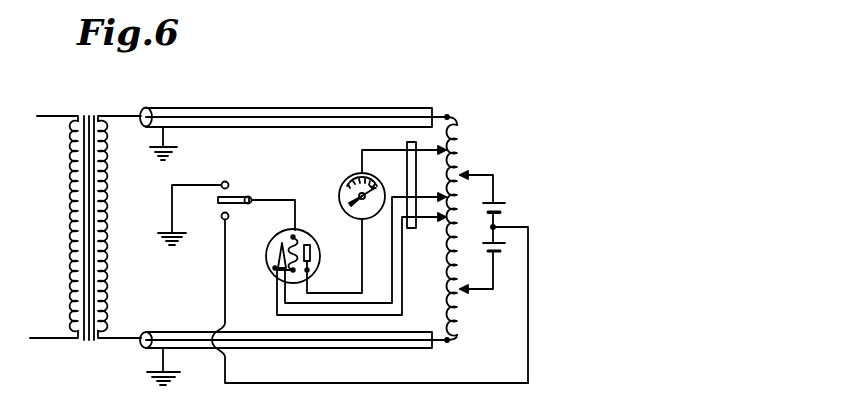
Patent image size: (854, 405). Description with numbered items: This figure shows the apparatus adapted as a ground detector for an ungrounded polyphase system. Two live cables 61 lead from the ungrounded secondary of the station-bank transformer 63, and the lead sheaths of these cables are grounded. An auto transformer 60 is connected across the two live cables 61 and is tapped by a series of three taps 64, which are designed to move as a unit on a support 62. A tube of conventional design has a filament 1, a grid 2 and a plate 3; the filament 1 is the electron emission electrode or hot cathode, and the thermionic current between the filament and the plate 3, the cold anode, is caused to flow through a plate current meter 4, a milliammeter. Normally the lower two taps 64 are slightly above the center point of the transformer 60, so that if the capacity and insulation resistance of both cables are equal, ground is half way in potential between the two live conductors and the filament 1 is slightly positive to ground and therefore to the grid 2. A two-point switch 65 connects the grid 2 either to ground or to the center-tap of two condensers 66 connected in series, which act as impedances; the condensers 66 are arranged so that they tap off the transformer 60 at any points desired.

The filament 1 is at (273, 265).
The grid 2 is at (298, 243).
The plate 3 is at (311, 252).
The plate current meter 4 is at (344, 176).
The auto transformer 60 is at (460, 155).
The live cables 61 is at (238, 127).
The support 62 is at (460, 214).
The station-bank transformer 63 is at (70, 233).
The taps 64 is at (460, 206).
The two-point switch 65 is at (237, 195).
The condensers 66 is at (508, 251).